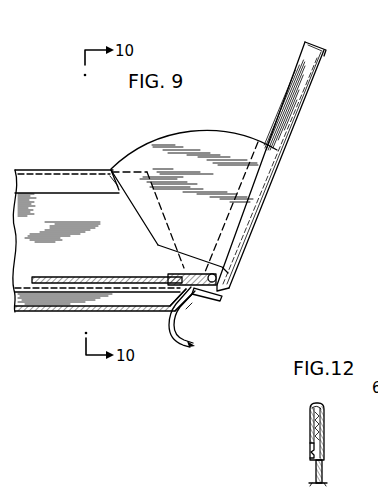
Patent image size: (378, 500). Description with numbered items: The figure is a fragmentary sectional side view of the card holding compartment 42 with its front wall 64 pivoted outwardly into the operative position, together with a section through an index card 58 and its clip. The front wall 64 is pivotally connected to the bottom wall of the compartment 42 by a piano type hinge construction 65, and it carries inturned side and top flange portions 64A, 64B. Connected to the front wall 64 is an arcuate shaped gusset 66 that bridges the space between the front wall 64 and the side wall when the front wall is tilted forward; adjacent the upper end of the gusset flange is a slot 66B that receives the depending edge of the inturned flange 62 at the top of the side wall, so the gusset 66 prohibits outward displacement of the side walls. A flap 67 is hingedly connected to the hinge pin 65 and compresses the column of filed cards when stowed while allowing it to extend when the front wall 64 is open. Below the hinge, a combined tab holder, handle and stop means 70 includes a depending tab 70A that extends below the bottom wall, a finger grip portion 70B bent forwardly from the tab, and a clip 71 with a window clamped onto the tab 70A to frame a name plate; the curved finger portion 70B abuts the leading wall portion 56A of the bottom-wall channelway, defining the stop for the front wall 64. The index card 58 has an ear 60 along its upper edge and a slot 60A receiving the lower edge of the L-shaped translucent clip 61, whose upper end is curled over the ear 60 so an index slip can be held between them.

In FIG. 9, the card holding compartment 42 is at (55, 321).
In FIG. 9, the leading wall portion of the channelway 56A is at (180, 292).
In FIG. 12, the index card 58 is at (316, 477).
In FIG. 12, the ear 60 is at (310, 434).
In FIG. 12, the slot 60A is at (323, 461).
In FIG. 12, the clip 61 is at (323, 431).
In FIG. 9, the inturned flange 62 is at (60, 169).
In FIG. 9, the front wall 64 is at (302, 111).
In FIG. 9, the side flange portion 64A is at (294, 77).
In FIG. 9, the top flange portion 64B is at (317, 44).
In FIG. 9, the piano type hinge construction 65 is at (218, 277).
In FIG. 9, the arcuate shaped gusset 66 is at (216, 152).
In FIG. 9, the slot of gusset flange 66B is at (113, 184).
In FIG. 9, the flap 67 is at (76, 277).
In FIG. 9, the combined tab holder, handle and stop means 70 is at (176, 326).
In FIG. 9, the depending tab 70A is at (214, 300).
In FIG. 9, the finger grip portion 70B is at (194, 346).
In FIG. 9, the clip 71 is at (190, 312).